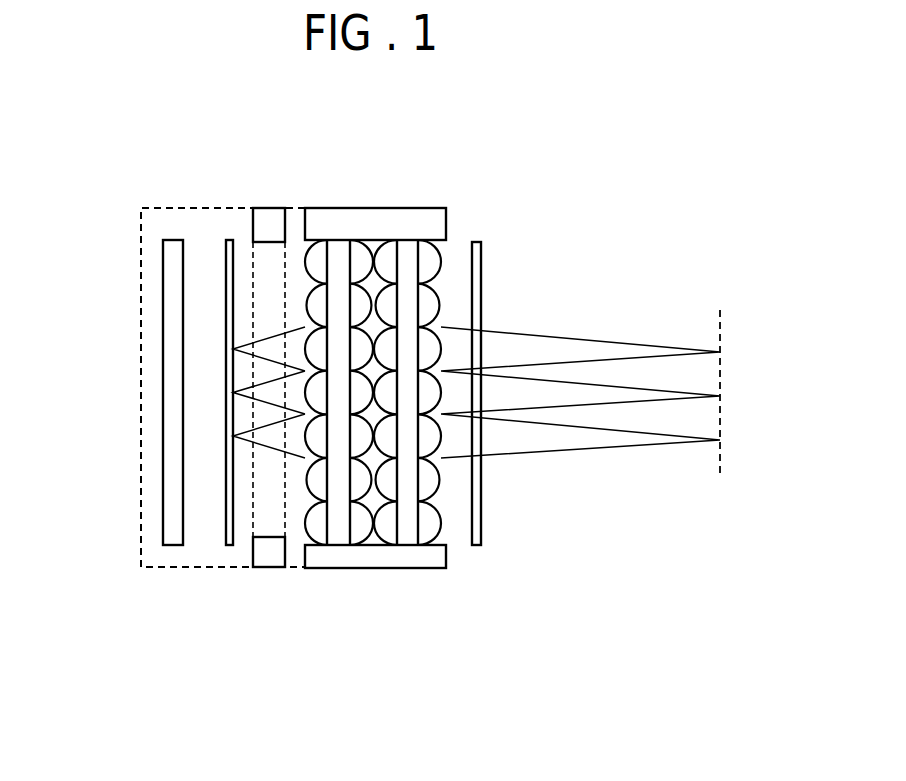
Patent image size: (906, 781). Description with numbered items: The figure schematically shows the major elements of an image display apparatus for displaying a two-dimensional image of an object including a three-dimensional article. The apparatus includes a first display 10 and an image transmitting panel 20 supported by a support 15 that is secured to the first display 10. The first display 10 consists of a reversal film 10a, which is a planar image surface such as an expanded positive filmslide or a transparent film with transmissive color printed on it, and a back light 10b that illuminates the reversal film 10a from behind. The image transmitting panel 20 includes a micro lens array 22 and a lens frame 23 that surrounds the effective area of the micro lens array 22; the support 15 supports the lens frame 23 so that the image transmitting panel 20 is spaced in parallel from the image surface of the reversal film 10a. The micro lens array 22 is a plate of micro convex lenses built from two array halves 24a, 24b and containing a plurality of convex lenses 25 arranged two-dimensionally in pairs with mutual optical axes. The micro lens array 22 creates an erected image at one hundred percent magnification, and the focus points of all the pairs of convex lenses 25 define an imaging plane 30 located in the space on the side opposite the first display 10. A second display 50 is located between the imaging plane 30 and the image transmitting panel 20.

The first display 10 is at (158, 208).
The reversal film 10a is at (231, 240).
The back light 10b is at (170, 352).
The support 15 is at (266, 225).
The image transmitting panel 20 is at (378, 374).
The micro lens array 22 is at (300, 540).
The lens frame 23 is at (313, 226).
The array half 24a is at (342, 238).
The array half 24b is at (408, 238).
The convex lens 25 is at (433, 265).
The imaging plane 30 is at (721, 325).
The second display 50 is at (481, 530).